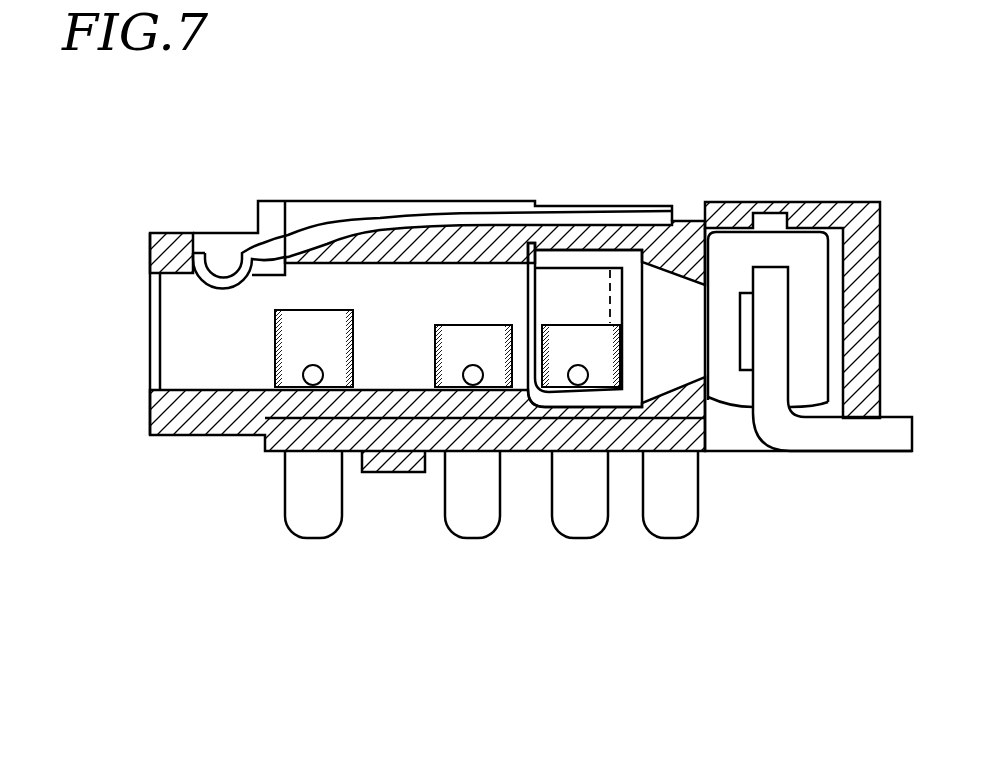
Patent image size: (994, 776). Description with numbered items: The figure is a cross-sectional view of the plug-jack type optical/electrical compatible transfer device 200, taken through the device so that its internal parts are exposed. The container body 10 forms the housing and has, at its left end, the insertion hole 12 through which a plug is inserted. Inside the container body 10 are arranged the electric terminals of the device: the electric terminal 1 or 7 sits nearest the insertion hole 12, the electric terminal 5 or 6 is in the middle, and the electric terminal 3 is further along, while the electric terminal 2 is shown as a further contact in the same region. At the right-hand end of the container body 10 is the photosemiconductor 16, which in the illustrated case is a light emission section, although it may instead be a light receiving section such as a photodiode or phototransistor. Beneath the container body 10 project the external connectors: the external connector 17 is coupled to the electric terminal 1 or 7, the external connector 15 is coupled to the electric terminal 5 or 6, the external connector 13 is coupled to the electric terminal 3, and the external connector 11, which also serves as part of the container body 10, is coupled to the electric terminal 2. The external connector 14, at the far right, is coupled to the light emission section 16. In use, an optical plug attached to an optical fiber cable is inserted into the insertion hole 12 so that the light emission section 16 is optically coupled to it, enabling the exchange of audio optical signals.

The transfer device 200 is at (802, 607).
The container body 10 is at (188, 425).
The insertion hole 12 is at (136, 311).
The electric terminal 2 is at (668, 275).
The electric terminal 1 is at (289, 239).
The electric terminal 7 is at (297, 315).
The electric terminal 5 is at (459, 229).
The electric terminal 6 is at (452, 330).
The electric terminal 3 is at (567, 330).
The photosemiconductor 16 is at (810, 233).
The external connector 14 is at (867, 440).
The external connector 17 is at (290, 507).
The external connector 15 is at (462, 530).
The external connector 13 is at (582, 532).
The external connector 11 is at (675, 532).